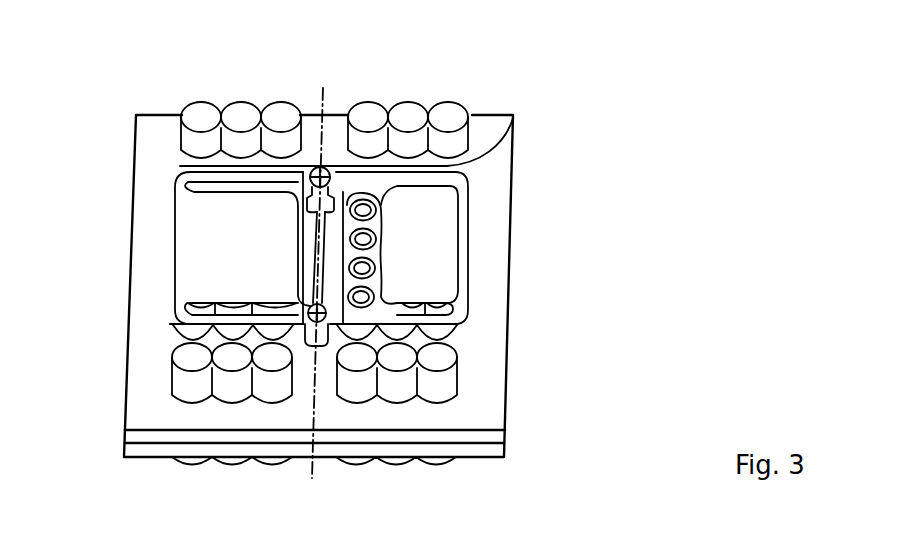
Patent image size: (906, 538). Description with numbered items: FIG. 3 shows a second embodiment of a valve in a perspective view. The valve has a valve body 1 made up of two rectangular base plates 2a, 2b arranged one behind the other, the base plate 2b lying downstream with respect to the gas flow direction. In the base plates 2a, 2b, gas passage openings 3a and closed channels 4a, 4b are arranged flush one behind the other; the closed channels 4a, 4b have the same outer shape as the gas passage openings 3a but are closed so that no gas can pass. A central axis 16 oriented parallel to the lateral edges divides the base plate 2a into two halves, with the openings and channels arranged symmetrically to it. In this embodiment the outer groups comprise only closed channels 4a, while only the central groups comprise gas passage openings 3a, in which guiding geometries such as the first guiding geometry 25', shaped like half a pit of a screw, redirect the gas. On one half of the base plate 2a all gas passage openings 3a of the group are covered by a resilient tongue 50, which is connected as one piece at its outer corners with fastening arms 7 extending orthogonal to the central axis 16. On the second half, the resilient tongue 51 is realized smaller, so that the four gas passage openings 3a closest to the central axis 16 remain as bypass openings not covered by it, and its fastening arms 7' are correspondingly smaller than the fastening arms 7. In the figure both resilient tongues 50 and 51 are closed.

The valve body 1 is at (513, 207).
The base plate 2a is at (513, 128).
The base plate 2b is at (507, 452).
The gas passage openings 3a is at (374, 194).
The closed channels 4a is at (452, 110).
The closed channels 4b is at (440, 468).
The fastening arms 7 is at (181, 254).
The fastening arms 7' is at (414, 225).
The central axis 16 is at (326, 99).
The first guiding geometry 25' is at (378, 406).
The resilient tongue 50 is at (205, 248).
The resilient tongue 51 is at (443, 243).